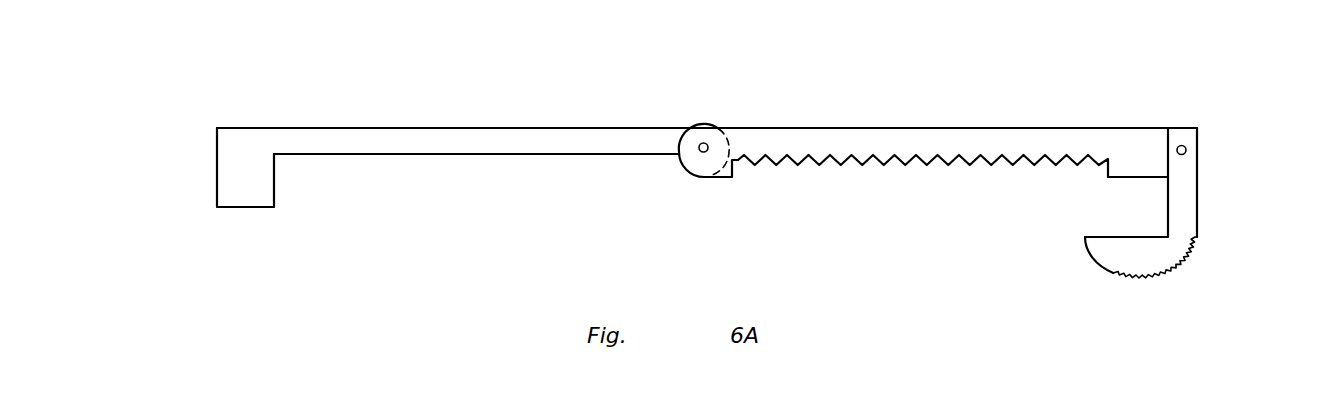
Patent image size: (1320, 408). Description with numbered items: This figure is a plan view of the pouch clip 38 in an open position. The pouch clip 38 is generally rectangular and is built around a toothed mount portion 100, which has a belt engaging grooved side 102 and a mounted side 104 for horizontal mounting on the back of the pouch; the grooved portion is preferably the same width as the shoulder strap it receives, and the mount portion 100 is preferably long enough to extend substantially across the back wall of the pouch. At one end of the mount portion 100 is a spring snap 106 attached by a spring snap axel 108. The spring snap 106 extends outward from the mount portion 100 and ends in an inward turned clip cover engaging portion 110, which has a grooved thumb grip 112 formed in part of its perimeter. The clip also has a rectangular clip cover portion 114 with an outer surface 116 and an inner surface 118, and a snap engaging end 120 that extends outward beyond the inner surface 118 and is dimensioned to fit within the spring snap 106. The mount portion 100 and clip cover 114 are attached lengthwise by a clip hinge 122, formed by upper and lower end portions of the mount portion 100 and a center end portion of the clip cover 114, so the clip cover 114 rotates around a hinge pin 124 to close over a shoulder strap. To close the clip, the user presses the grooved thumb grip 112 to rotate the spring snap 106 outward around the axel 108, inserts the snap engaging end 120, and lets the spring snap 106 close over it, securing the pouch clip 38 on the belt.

The pouch clip 38 is at (1074, 76).
The toothed mount portion 100 is at (848, 142).
The belt engaging grooved side 102 is at (980, 160).
The mounted side 104 is at (950, 128).
The spring snap 106 is at (1190, 202).
The spring snap axel 108 is at (1183, 145).
The clip cover engaging portion 110 is at (1120, 258).
The grooved thumb grip 112 is at (1185, 262).
The clip cover portion 114 is at (423, 143).
The outer surface 116 is at (299, 127).
The inner surface 118 is at (503, 155).
The snap engaging end 120 is at (228, 154).
The clip hinge 122 is at (713, 137).
The hinge pin 124 is at (700, 143).